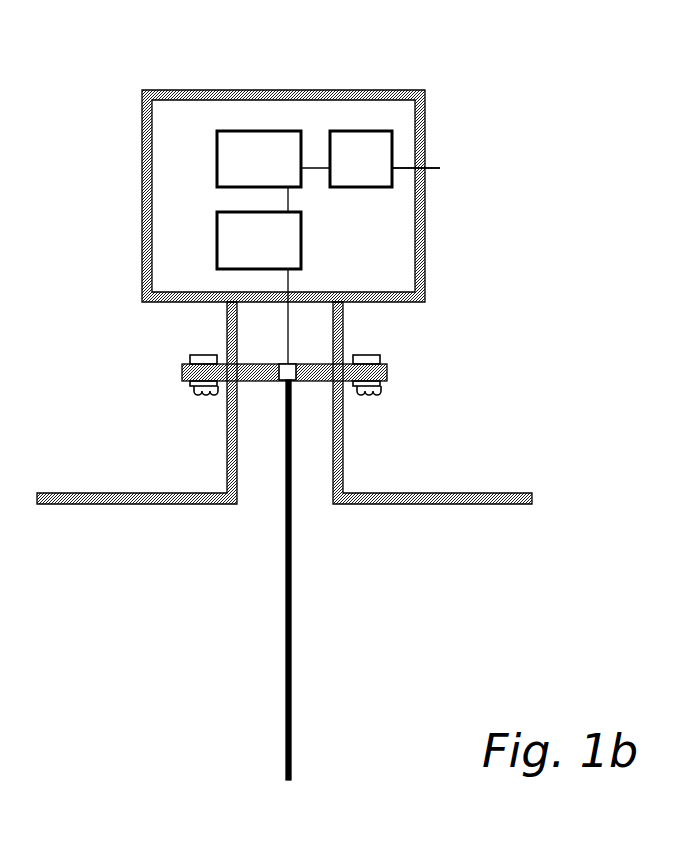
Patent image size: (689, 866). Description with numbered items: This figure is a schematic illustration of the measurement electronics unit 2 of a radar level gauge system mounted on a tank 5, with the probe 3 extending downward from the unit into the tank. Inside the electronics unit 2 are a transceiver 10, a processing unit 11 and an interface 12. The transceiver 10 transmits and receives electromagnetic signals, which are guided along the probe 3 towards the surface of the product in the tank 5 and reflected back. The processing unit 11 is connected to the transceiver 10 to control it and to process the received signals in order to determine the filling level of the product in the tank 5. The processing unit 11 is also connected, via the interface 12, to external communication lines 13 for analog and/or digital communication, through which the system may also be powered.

The measurement electronics unit 2 is at (200, 90).
The probe 3 is at (291, 615).
The tank 5 is at (459, 492).
The transceiver 10 is at (301, 240).
The processing unit 11 is at (217, 161).
The interface 12 is at (363, 131).
The external communication lines 13 is at (433, 170).